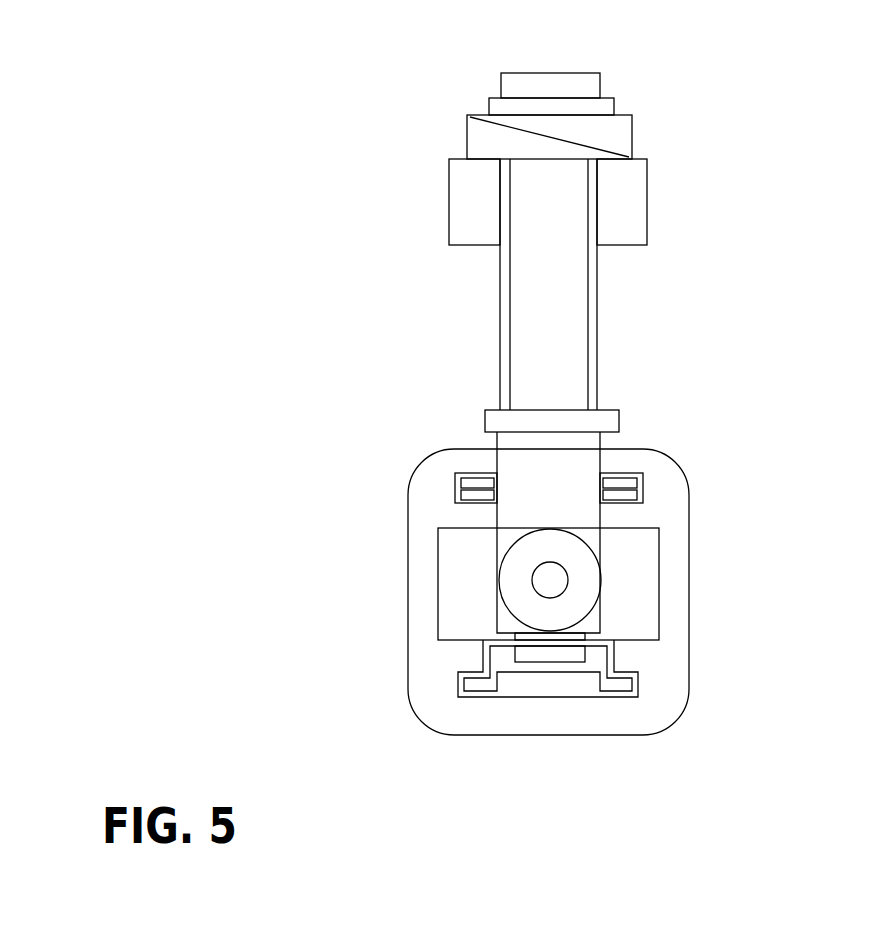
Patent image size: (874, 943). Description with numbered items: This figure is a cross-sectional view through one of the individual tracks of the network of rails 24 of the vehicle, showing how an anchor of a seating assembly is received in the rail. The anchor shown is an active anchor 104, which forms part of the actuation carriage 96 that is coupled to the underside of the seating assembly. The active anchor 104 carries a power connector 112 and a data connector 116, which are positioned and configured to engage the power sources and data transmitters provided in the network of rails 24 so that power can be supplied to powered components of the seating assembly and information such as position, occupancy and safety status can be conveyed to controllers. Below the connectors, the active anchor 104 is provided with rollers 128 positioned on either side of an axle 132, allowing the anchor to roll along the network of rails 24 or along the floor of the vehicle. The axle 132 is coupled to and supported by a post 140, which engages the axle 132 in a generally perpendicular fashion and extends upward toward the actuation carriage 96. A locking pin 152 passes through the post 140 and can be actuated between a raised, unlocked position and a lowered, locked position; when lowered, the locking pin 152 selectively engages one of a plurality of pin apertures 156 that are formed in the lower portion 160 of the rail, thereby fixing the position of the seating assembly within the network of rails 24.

The actuation carriage 96 is at (337, 137).
The active anchor 104 is at (695, 192).
The post 140 is at (600, 335).
The network of rails 24 is at (712, 662).
The power connector 112 is at (458, 480).
The data connector 116 is at (458, 497).
The roller 128 is at (515, 594).
The axle 132 is at (561, 580).
The locking pin 152 is at (561, 655).
The pin aperture 156 is at (527, 648).
The lower portion 160 is at (497, 647).